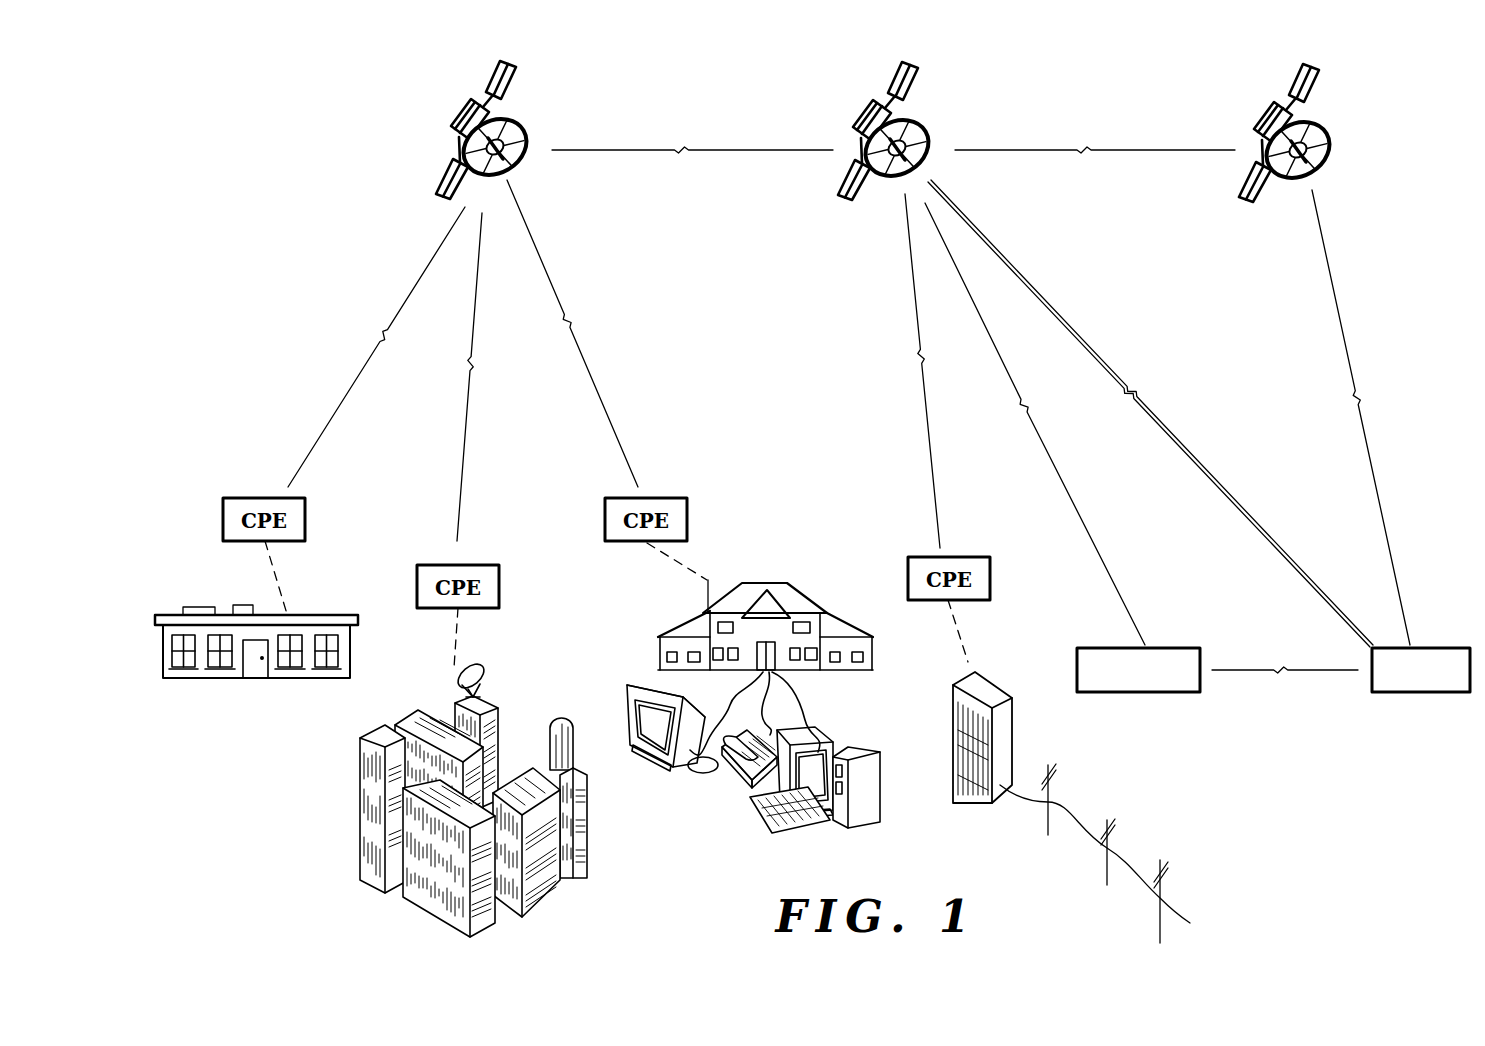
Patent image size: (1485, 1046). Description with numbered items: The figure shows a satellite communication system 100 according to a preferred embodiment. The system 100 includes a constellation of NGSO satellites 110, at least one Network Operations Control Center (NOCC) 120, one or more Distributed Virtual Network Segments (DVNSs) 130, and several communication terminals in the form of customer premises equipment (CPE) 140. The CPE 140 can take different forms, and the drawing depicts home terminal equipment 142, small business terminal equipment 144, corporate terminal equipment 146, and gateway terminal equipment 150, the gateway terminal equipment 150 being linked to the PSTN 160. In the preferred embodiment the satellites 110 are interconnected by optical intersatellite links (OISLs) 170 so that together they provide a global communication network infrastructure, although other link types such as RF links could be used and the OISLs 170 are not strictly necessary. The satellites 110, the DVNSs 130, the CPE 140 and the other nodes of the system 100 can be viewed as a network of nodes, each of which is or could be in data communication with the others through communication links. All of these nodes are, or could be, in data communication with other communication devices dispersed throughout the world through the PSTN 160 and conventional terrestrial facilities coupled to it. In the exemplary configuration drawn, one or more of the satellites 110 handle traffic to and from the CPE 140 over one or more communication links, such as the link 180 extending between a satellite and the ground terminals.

The satellite communication system 100 is at (707, 918).
The NGSO satellites 110 is at (459, 122).
The Network Operations Control Center (NOCC) 120 is at (1419, 693).
The Distributed Virtual Network Segments (DVNSs) 130 is at (1139, 693).
The Customer premises equipment (CPE) 140 is at (242, 498).
The home terminal equipment 142 is at (660, 654).
The small business terminal equipment 144 is at (251, 679).
The corporate terminal equipment 146 is at (360, 805).
The gateway terminal equipment 150 is at (953, 706).
The PSTN 160 is at (1052, 846).
The optical intersatellite links (OISLs) 170 is at (619, 148).
The communication link 180 is at (420, 272).